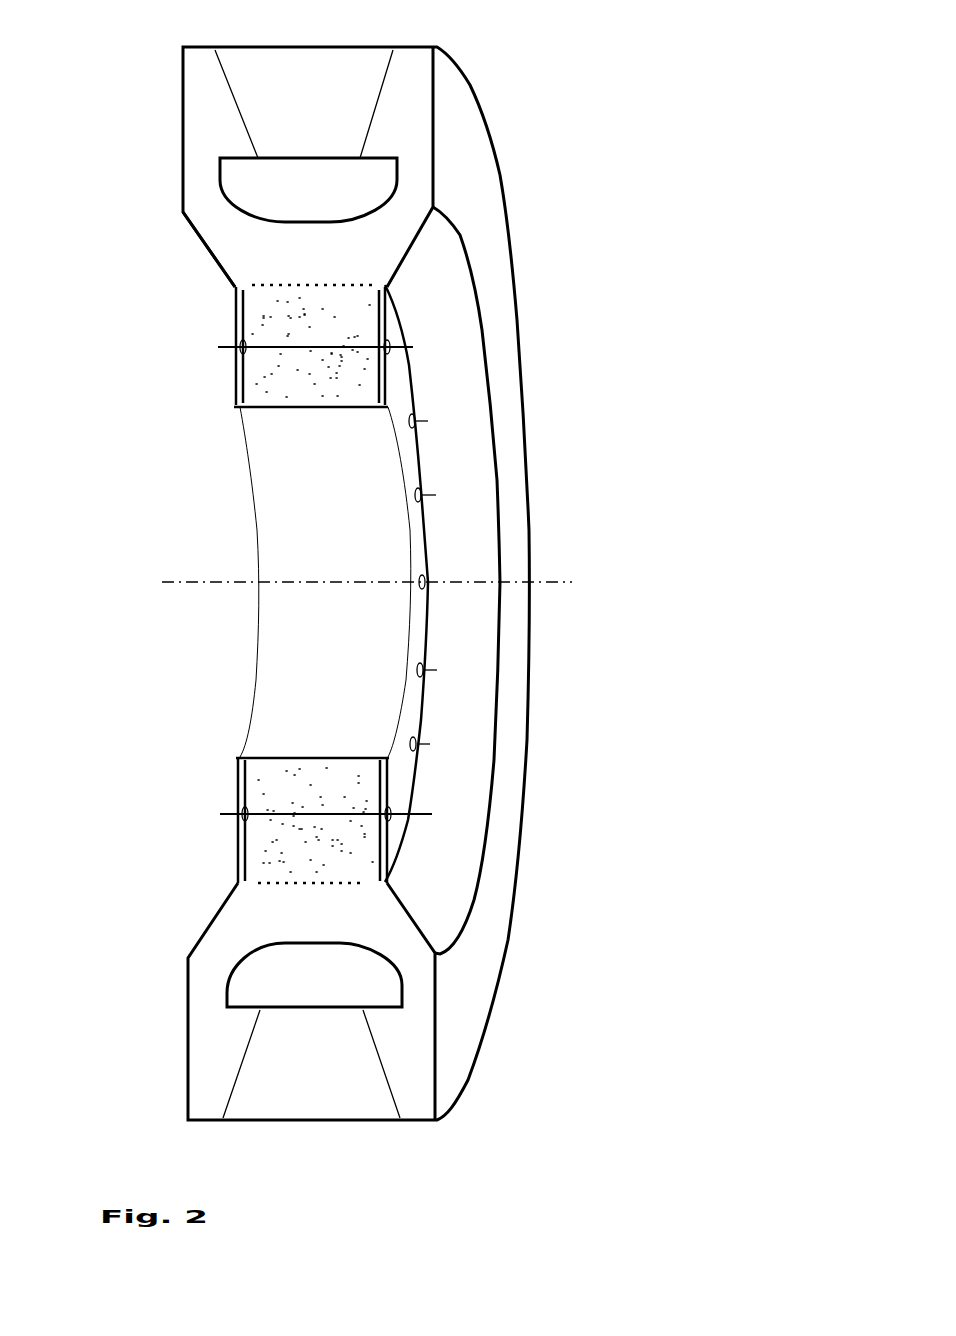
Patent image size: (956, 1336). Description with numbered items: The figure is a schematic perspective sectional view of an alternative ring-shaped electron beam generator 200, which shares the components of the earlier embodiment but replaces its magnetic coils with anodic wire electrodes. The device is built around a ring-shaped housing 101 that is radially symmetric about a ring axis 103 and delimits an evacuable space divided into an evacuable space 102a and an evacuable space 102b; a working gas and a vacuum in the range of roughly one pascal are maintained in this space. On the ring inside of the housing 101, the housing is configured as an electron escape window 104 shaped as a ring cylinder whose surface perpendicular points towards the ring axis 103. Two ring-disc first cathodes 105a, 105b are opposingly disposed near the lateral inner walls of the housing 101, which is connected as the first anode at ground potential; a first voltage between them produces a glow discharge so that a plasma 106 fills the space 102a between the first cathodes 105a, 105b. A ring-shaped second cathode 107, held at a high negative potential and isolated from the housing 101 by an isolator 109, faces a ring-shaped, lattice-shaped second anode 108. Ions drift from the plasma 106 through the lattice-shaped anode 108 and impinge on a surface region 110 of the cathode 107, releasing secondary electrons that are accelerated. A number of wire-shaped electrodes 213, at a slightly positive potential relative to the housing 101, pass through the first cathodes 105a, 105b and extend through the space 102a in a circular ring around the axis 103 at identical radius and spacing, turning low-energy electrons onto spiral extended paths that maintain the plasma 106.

The ring-shaped housing 101 is at (433, 127).
The isolator 109 is at (378, 102).
The ring-shaped cathode 107 is at (397, 183).
The surface region 110 is at (293, 940).
The evacuable space 102b is at (260, 237).
The evacuable space 102a is at (283, 303).
The lattice-shaped anode 108 is at (337, 283).
The first cathode 105a is at (387, 322).
The first cathode 105b is at (250, 383).
The electron escape window 104 is at (290, 411).
The plasma 106 is at (277, 321).
The ring axis 103 is at (550, 580).
The wire-shaped electrodes 213 is at (430, 812).
The ring-shaped electron beam generator 200 is at (548, 990).